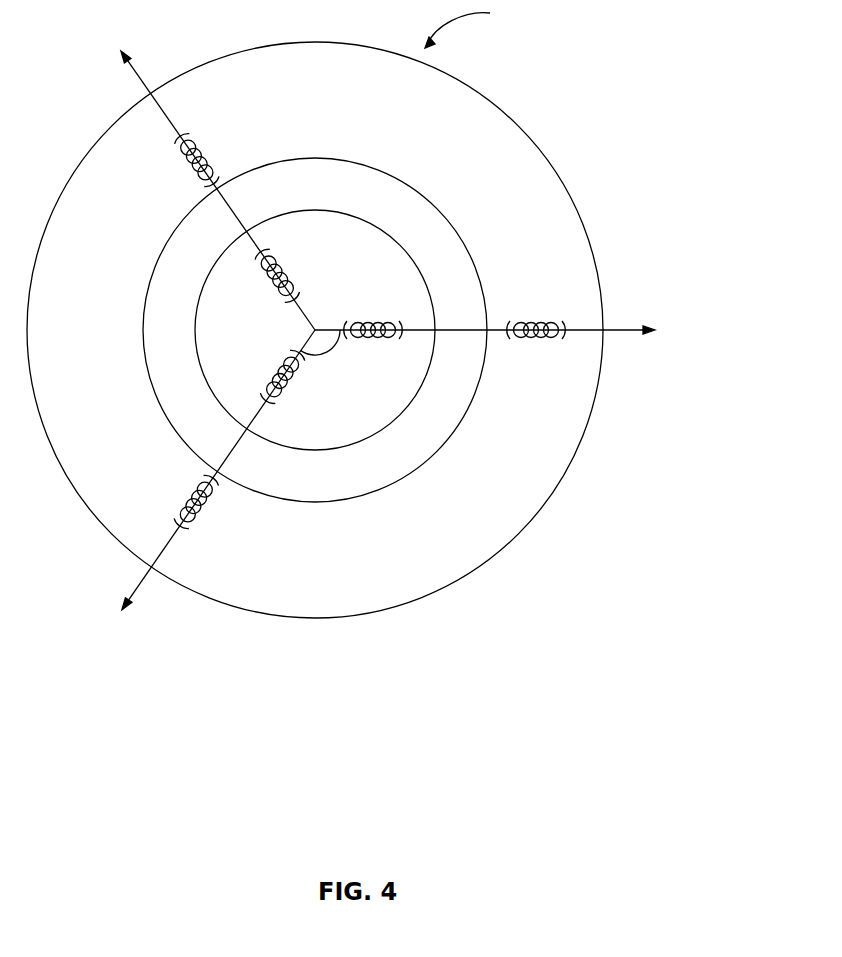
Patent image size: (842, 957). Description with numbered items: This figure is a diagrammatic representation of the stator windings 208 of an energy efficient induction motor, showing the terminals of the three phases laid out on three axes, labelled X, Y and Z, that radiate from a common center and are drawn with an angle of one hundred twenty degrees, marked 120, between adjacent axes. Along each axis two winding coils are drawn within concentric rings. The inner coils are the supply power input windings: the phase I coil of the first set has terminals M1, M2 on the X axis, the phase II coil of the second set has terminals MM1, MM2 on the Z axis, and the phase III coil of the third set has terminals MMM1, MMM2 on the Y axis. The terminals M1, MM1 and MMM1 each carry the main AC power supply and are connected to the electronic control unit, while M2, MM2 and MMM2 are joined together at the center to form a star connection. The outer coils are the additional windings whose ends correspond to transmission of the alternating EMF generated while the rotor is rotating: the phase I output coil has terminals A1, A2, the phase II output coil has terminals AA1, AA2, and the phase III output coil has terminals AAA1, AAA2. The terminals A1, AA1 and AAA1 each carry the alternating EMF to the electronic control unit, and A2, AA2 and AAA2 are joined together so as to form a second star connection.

The stator windings 208 is at (469, 28).
The X axis X is at (500, 343).
The Y axis Y is at (202, 190).
The Z axis Z is at (218, 487).
The angle between axes 120 is at (320, 346).
The motor winding terminal of phase I of the first set of windings M1 is at (348, 325).
The motor winding terminal of phase I of the first set of windings M2 is at (398, 325).
The motor winding terminal of phase II of the second set of windings MM1 is at (312, 331).
The motor winding terminal of phase II of the second set of windings MM2 is at (266, 396).
The motor winding terminal of phase III of the third set of windings MMM1 is at (297, 295).
The motor winding terminal of phase III of the third set of windings MMM2 is at (264, 260).
The alternating EMF output terminal of phase I of the first set of windings A1 is at (508, 334).
The alternating EMF output terminal of phase I of the first set of windings A2 is at (548, 338).
The alternating EMF output terminal of phase II of the second set of windings AA1 is at (208, 482).
The alternating EMF output terminal of phase II of the second set of windings AA2 is at (182, 522).
The alternating EMF output terminal of phase III of the third set of windings AAA1 is at (207, 187).
The alternating EMF output terminal of phase III of the third set of windings AAA2 is at (178, 146).